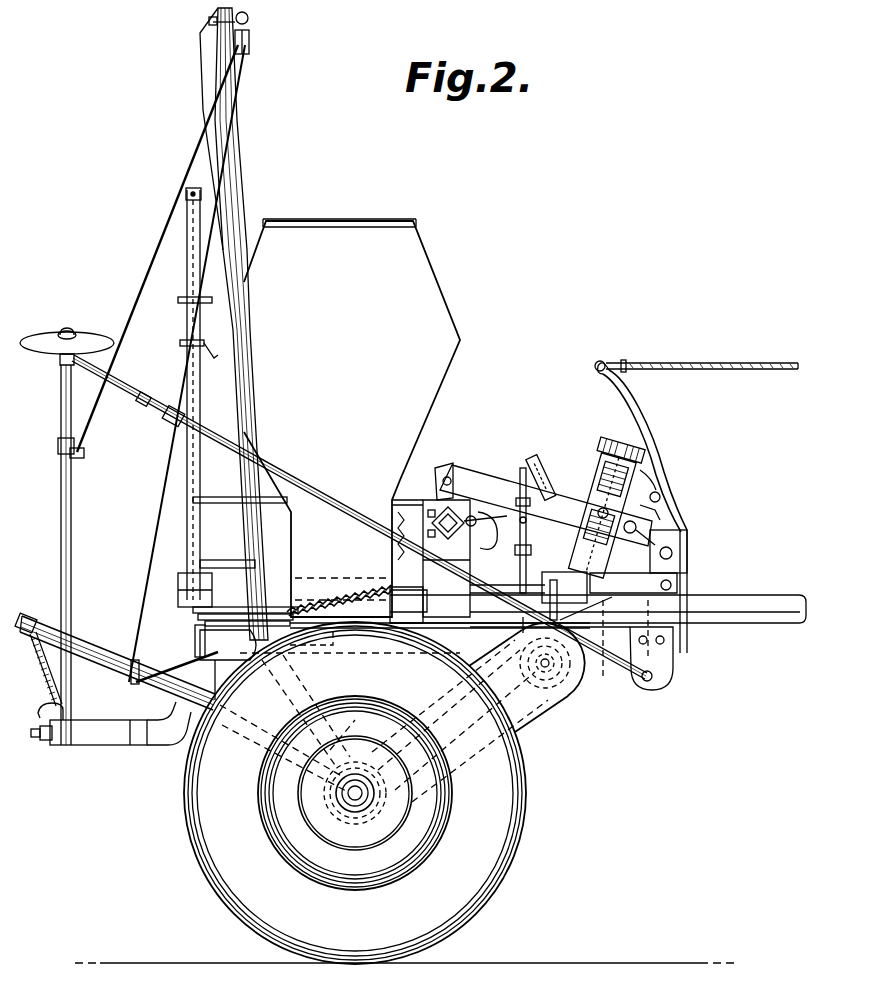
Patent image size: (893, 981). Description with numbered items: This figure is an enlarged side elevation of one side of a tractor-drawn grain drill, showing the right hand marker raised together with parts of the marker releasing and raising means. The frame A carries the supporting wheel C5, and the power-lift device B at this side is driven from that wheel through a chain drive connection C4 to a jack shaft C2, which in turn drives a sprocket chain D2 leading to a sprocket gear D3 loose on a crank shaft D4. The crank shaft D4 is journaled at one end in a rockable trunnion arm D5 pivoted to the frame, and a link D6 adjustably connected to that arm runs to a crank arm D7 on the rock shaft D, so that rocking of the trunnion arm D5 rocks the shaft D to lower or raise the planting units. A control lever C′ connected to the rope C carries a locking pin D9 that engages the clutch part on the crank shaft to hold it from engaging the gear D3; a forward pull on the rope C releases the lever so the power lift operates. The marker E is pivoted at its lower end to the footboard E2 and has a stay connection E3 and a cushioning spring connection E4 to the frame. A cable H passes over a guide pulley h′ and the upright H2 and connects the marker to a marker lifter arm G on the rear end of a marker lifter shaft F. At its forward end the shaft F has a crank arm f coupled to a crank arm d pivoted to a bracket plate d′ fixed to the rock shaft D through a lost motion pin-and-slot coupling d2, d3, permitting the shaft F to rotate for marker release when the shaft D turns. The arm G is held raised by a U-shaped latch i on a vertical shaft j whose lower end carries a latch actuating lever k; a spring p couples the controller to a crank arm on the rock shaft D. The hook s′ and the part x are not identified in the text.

The frame A is at (679, 652).
The power-lift device B is at (624, 446).
The rope C is at (760, 362).
The rope C′ is at (639, 404).
The jack shaft C2 is at (560, 698).
The chain drive connection C4 is at (533, 722).
The supporting wheel C5 is at (500, 817).
The rock shaft D is at (405, 500).
The sprocket chain D2 is at (606, 651).
The sprocket gear D3 is at (603, 468).
The crank shaft D4 is at (650, 480).
The rockable trunnion arm D5 is at (668, 523).
The link D6 is at (468, 480).
The crank arm D7 is at (432, 482).
The locking pin D9 is at (660, 500).
The crank arm d is at (505, 512).
The bracket plate d′ is at (457, 580).
The pin of lost motion coupling d2 is at (485, 512).
The slot of lost motion coupling d3 is at (519, 548).
The hook s′ is at (480, 582).
The crank arm f is at (522, 620).
The marker lifter shaft F is at (403, 587).
The motion transmitting and retracting spring p is at (414, 542).
The plates x is at (240, 585).
The latch actuating and controlling lever k is at (205, 552).
The vertical shaft j is at (210, 386).
The U-shaped latch i is at (180, 300).
The marker lifter arm G is at (186, 208).
The cable H is at (143, 272).
The upright H2 is at (203, 75).
The guide pulley h′ is at (249, 44).
The marker E is at (69, 515).
The footboard E2 is at (108, 728).
The stay connection E3 is at (314, 474).
The cushioning spring connection E4 is at (35, 667).